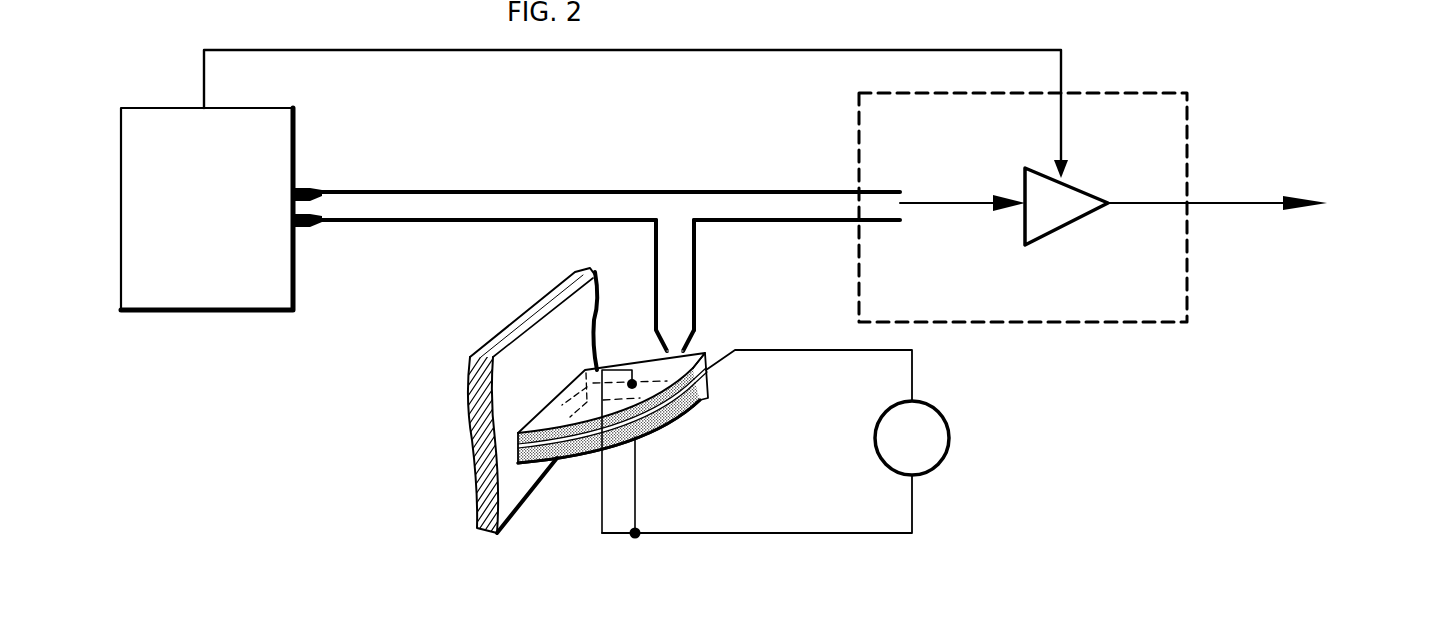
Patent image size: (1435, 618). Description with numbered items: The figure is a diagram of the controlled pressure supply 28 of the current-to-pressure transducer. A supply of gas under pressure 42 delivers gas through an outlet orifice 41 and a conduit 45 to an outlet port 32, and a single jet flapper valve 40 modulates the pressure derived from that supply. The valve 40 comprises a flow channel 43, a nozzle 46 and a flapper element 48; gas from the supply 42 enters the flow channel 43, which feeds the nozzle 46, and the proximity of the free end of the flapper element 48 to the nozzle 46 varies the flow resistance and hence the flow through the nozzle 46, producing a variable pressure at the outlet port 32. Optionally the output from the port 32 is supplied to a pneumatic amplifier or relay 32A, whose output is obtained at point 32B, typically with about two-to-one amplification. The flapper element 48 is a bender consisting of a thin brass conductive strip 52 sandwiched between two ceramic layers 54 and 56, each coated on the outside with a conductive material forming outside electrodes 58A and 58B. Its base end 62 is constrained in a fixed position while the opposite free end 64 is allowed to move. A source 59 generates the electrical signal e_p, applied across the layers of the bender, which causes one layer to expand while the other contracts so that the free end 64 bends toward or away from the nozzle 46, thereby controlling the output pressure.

The controlled pressure supply 28 is at (1093, 440).
The outlet port 32 is at (900, 194).
The pneumatic amplifier or relay 32A is at (1085, 198).
The output point of the relay 32B is at (1246, 200).
The single jet flapper valve 40 is at (724, 332).
The outlet orifice 41 is at (312, 190).
The supply of gas under pressure 42 is at (228, 286).
The flow channel 43 is at (692, 293).
The conduit 45 is at (578, 196).
The nozzle 46 is at (657, 335).
The flapper element 48 is at (708, 388).
The brass conductive strip 52 is at (668, 418).
The ceramic layer 54 is at (547, 433).
The ceramic layer 56 is at (563, 462).
The outside electrode 58A is at (622, 370).
The outside electrode 58B is at (634, 438).
The source 59 is at (950, 436).
The base end 62 is at (480, 468).
The free end 64 is at (707, 366).